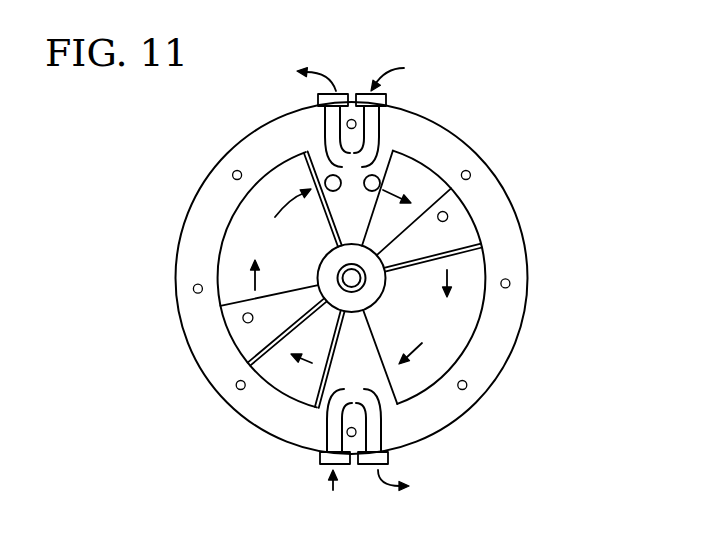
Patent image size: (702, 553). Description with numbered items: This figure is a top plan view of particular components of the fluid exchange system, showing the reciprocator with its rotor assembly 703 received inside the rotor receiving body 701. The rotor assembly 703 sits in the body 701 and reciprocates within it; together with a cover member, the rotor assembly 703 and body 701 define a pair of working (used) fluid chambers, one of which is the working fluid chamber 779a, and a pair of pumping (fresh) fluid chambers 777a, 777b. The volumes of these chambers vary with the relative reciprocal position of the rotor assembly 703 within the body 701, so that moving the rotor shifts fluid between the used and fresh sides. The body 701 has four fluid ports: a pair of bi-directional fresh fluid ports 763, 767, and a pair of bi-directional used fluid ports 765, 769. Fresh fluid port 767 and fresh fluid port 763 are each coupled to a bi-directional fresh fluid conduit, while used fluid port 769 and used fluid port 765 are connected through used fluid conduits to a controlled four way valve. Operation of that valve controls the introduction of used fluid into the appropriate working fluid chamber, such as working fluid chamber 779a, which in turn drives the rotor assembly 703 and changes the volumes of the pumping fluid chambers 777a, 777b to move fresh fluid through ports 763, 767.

The rotor receiving body 701 is at (217, 198).
The rotor assembly 703 is at (250, 342).
The bi-directional fresh fluid port 763 is at (368, 466).
The bi-directional used fluid port 765 is at (326, 466).
The bi-directional fresh fluid port 767 is at (364, 92).
The bi-directional used fluid port 769 is at (342, 93).
The pumping fluid chamber 777a is at (420, 178).
The pumping fluid chamber 777b is at (462, 315).
The working fluid chamber 779a is at (248, 238).